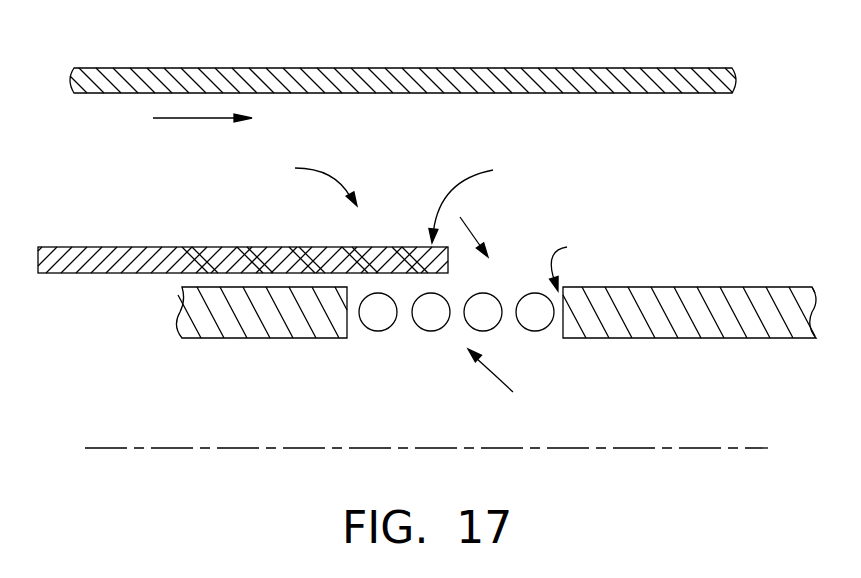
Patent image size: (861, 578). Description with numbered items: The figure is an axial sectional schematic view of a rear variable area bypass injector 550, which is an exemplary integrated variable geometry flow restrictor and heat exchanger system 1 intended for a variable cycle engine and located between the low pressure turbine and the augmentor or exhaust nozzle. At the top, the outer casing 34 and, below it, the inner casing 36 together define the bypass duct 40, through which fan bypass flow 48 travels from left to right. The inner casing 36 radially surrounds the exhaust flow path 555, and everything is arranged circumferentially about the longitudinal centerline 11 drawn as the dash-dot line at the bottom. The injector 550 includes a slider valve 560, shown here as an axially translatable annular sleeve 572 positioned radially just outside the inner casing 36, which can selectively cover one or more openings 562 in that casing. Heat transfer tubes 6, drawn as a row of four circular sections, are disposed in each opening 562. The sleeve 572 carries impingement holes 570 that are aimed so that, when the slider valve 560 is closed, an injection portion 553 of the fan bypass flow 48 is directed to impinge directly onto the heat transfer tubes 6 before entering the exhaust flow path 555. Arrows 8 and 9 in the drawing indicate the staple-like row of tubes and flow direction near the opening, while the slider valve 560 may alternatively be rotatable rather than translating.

The outer casing 34 is at (518, 68).
The fan bypass flow 48 is at (193, 118).
The bypass duct 40 is at (128, 188).
The variable area bypass injector 550 is at (303, 180).
The integrated variable geometry flow restrictor and heat exchanger system 1 is at (470, 199).
The axially translatable annular sleeve 572 is at (137, 248).
The impingement holes 570 is at (405, 247).
The injection portion 553 is at (466, 224).
The openings 562 is at (582, 262).
The inner casing 36 is at (675, 287).
The slider valve 560 is at (147, 273).
The heat transfer tubes 6 is at (376, 331).
The staple row 8 is at (498, 378).
The last staple 9 is at (535, 331).
The exhaust flow path 555 is at (688, 412).
The longitudinal centerline 11 is at (310, 447).